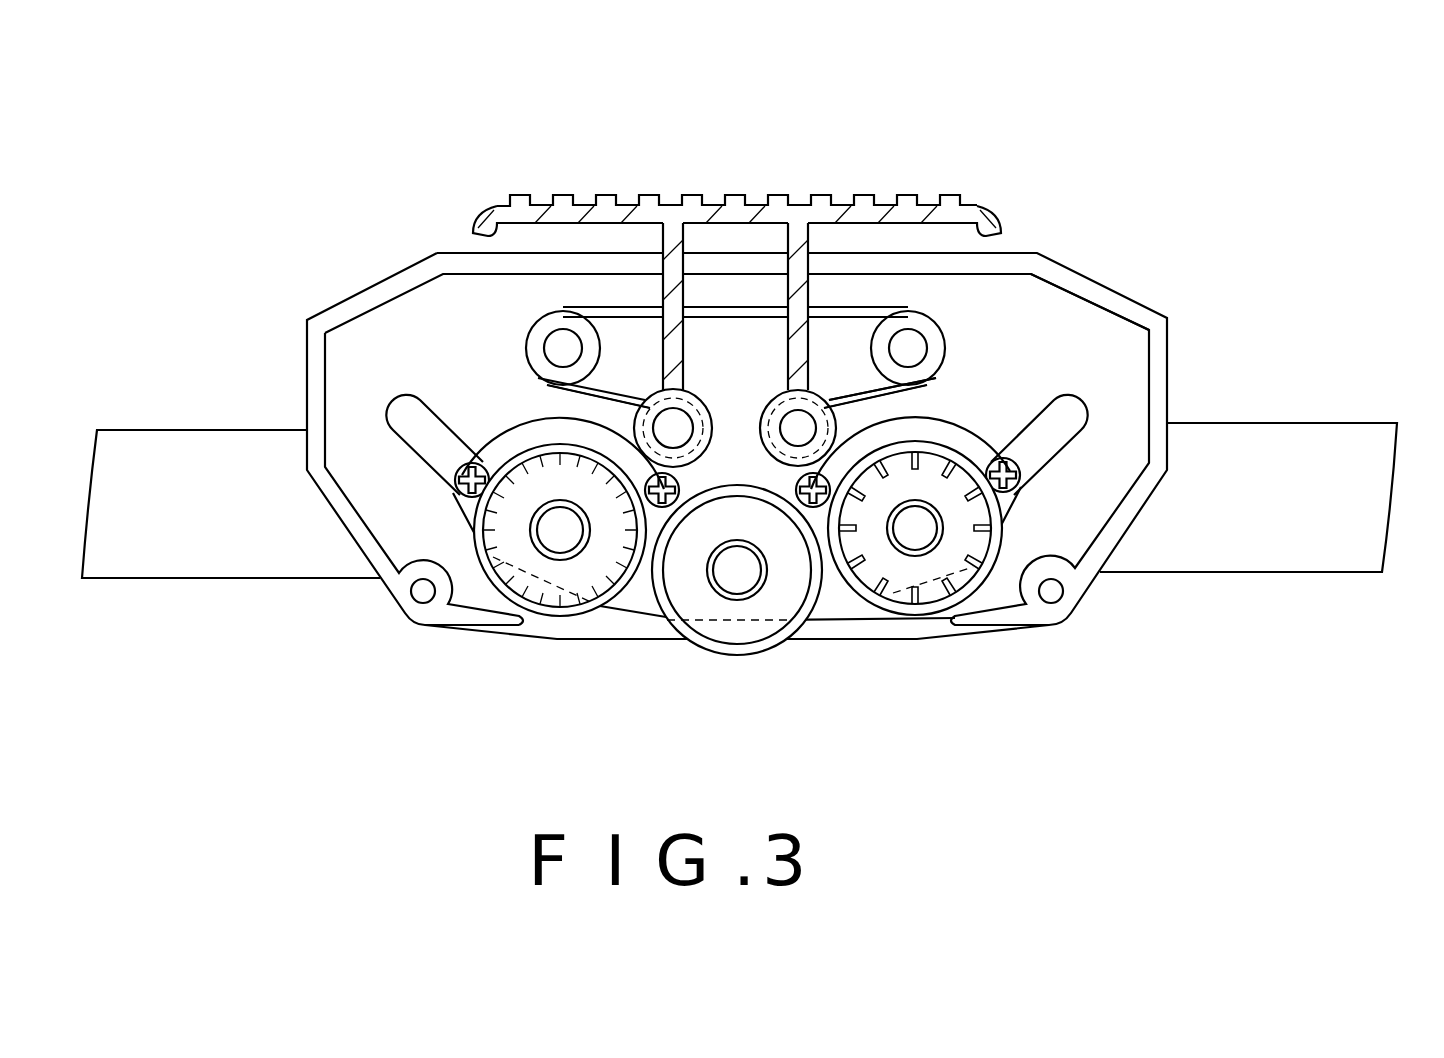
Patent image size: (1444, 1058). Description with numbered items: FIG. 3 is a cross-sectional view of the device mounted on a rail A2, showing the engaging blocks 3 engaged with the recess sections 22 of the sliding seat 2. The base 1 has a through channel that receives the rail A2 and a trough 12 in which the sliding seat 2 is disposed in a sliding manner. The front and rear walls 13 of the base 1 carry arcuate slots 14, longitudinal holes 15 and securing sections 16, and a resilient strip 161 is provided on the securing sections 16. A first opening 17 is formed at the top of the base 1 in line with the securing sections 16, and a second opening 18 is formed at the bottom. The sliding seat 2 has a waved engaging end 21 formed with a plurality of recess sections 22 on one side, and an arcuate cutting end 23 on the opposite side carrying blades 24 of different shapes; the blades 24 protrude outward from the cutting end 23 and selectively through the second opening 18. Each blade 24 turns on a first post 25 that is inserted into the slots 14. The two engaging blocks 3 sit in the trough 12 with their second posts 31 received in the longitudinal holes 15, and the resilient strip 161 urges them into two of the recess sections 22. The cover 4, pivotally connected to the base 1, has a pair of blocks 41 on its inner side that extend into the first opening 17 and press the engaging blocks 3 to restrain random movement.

The base 1 is at (1088, 273).
The sliding seat 2 is at (638, 593).
The engaging blocks 3 is at (828, 413).
The cover 4 is at (490, 212).
The trough 12 is at (1013, 268).
The front and rear walls 13 is at (1098, 338).
The arcuate slots 14 is at (1067, 413).
The longitudinal holes 15 is at (630, 392).
The securing sections 16 is at (907, 327).
The first opening 17 is at (690, 258).
The second opening 18 is at (863, 627).
The engaging end 21 is at (668, 390).
The recess sections 22 is at (822, 418).
The cutting end 23 is at (647, 615).
The blades 24 is at (935, 597).
The first post 25 is at (728, 573).
The second posts 31 is at (805, 425).
The blocks 41 is at (800, 323).
The resilient strip 161 is at (872, 310).
The rail A2 is at (1362, 453).